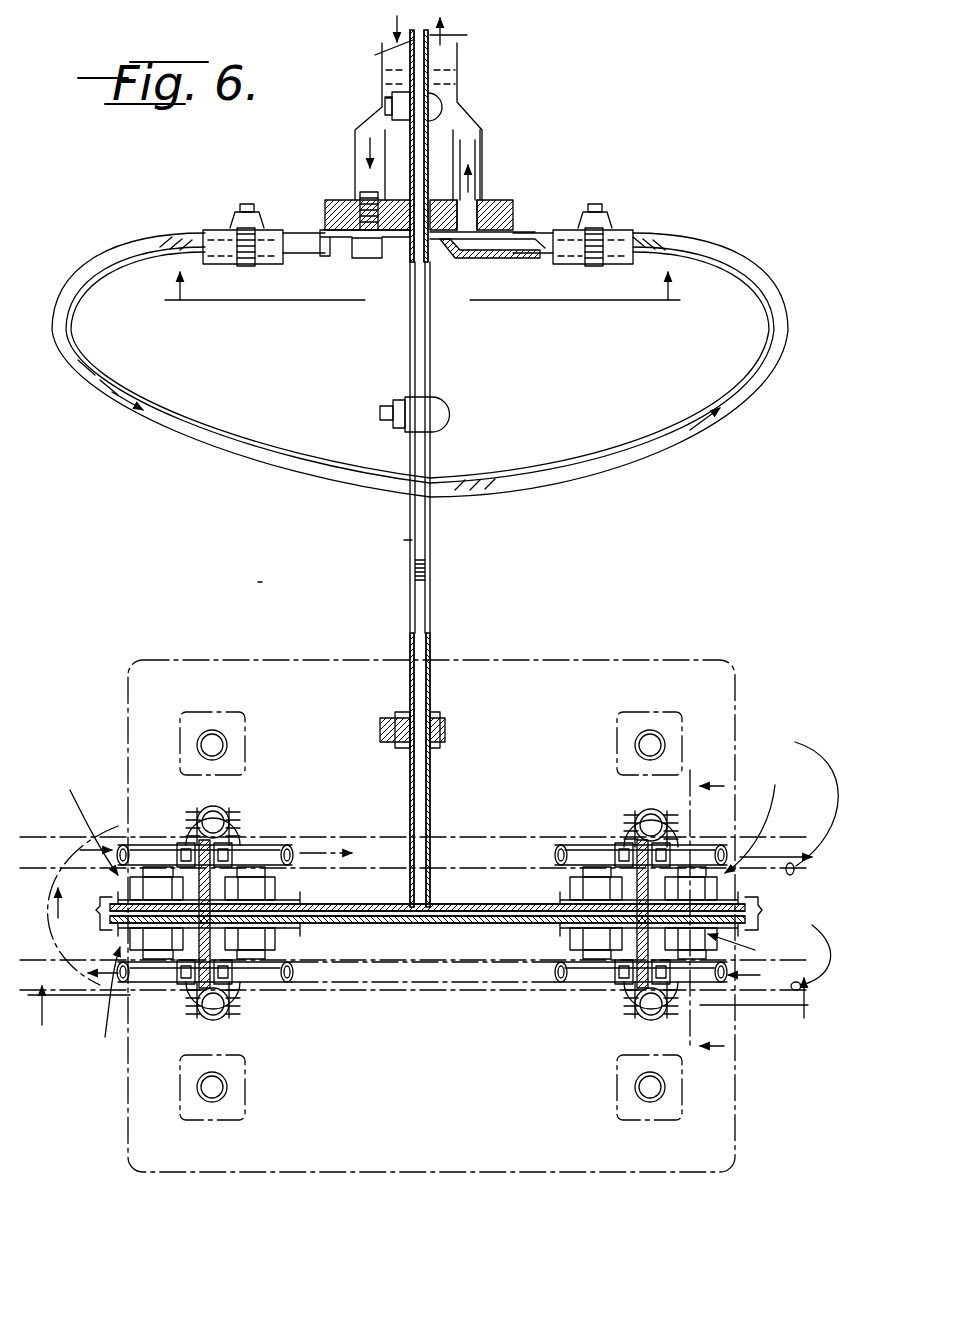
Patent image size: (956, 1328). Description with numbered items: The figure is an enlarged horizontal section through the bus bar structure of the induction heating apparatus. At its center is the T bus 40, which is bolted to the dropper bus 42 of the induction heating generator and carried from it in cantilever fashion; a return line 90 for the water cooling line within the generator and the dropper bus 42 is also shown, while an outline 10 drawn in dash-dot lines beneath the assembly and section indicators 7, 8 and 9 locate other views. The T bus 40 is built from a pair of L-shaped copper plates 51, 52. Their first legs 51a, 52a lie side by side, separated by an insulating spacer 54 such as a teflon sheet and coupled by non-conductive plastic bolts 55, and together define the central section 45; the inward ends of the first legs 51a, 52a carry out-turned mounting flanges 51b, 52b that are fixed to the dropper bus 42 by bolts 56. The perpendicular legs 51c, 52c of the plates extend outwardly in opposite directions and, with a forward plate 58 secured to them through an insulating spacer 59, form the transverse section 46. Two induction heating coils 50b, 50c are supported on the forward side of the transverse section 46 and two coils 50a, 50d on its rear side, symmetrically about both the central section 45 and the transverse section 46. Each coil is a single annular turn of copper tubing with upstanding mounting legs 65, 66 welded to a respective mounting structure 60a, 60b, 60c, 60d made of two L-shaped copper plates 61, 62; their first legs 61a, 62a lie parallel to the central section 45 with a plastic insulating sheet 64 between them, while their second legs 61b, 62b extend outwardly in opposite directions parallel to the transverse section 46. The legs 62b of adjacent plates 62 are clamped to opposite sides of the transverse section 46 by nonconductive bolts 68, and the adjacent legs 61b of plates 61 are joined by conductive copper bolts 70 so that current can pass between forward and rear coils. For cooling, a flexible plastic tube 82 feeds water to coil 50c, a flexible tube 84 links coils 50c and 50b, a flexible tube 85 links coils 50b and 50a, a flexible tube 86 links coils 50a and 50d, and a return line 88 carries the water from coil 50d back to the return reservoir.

The mounting plate 10 is at (312, 1172).
The T bus 40 is at (258, 580).
The dropper bus 42 is at (435, 85).
The central section 45 is at (405, 538).
The transverse section 46 is at (358, 932).
The L-shaped plate 51 is at (412, 578).
The first leg 51a is at (410, 300).
The mounting flange 51b is at (362, 196).
The perpendicular leg 51c is at (392, 906).
The L-shaped plate 52 is at (430, 553).
The first leg 52a is at (430, 300).
The mounting flange 52b is at (482, 200).
The perpendicular leg 52c is at (456, 906).
The insulating spacer 54 is at (430, 276).
The non-conductive bolts 55 is at (442, 405).
The bolts 56 is at (372, 256).
The forward plate 58 is at (368, 923).
The insulating spacer 59 is at (416, 923).
The induction heating coil 50a is at (232, 800).
The induction heating coil 50b is at (236, 1022).
The induction heating coil 50c is at (630, 1022).
The induction heating coil 50d is at (632, 802).
The mounting structure 60a is at (76, 830).
The mounting structure 60b is at (99, 1003).
The mounting structure 60c is at (753, 948).
The mounting structure 60d is at (760, 816).
The L-shaped plate 61 is at (110, 910).
The first leg 61a is at (190, 845).
The second leg 61b is at (160, 897).
The L-shaped plate 62 is at (345, 883).
The first leg 62a is at (236, 848).
The second leg 62b is at (292, 853).
The plastic insulating sheet 64 is at (212, 795).
The upstanding mounting leg 65 is at (210, 808).
The upstanding mounting leg 66 is at (232, 842).
The nonconductive bolts 68 is at (600, 964).
The conductive bolts 70 is at (135, 945).
The flexible plastic tube 82 is at (808, 951).
The flexible tube 84 is at (440, 1000).
The flexible tube 85 is at (46, 872).
The flexible tube 86 is at (452, 845).
The return line 88 is at (803, 800).
The return line 90 is at (668, 458).
The section line 7- 7 is at (422, 311).
The section line 8- 8 is at (418, 1014).
The section line 9- 9 is at (707, 918).